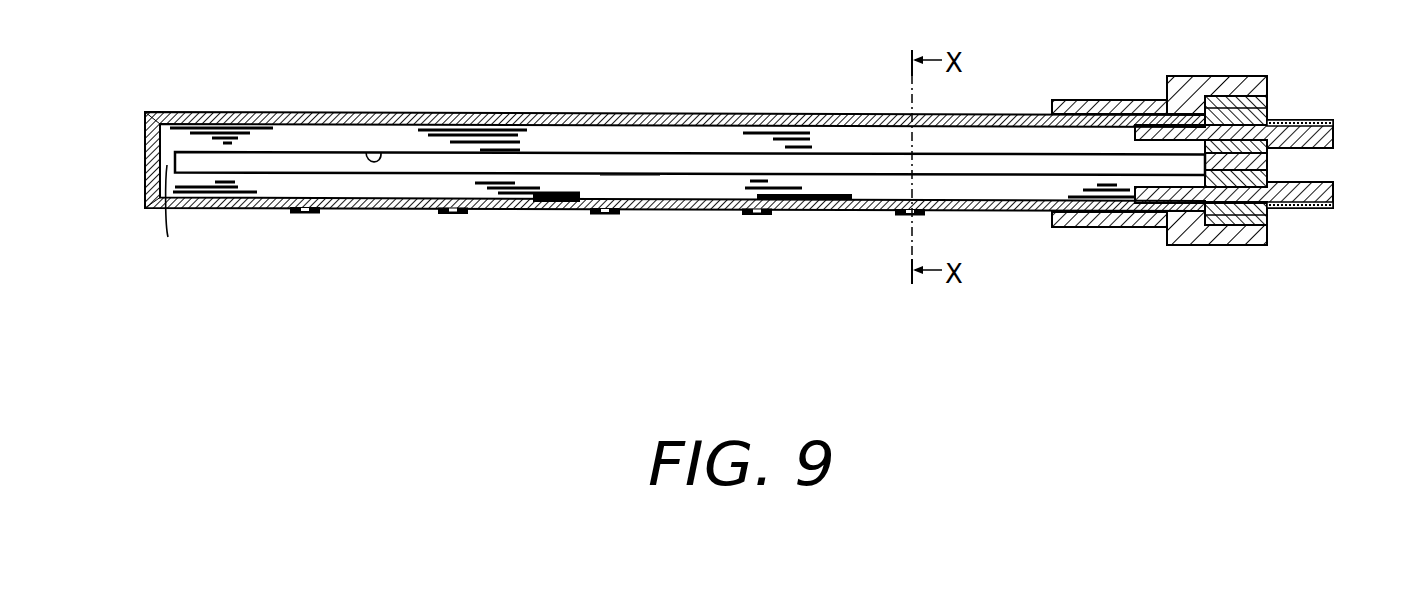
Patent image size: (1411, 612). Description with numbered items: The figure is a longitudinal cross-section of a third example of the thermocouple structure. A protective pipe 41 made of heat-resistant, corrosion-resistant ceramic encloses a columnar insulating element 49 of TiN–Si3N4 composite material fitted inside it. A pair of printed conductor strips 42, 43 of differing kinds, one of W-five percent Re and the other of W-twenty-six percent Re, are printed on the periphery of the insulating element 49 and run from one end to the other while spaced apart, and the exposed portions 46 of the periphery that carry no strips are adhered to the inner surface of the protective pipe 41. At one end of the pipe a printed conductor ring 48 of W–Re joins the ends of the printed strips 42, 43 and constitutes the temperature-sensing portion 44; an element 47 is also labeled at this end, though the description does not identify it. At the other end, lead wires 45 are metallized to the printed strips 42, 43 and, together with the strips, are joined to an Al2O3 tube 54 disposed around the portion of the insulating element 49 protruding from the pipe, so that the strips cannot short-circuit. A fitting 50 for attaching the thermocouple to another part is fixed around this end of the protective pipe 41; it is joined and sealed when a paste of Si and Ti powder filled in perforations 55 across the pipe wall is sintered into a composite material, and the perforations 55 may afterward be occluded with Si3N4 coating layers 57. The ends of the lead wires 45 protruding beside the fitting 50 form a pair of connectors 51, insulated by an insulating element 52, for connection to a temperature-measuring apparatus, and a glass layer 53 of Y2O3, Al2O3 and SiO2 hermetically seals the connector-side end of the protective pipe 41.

The protective pipe 41 is at (690, 113).
The printed conductor strip 42 is at (557, 140).
The printed conductor strip 43 is at (557, 208).
The temperature-sensing portion 44 is at (145, 142).
The lead wires 45 is at (1283, 120).
The exposed portions 46 is at (366, 152).
The seal 47 is at (147, 173).
The printed conductor ring 48 is at (163, 221).
The insulating element 49 is at (630, 165).
The fitting 50 is at (1193, 77).
The connectors 51 is at (1317, 121).
The insulating element 52 is at (1268, 163).
The glass layer 53 is at (1243, 77).
The Al2O3 tube 54 is at (1150, 112).
The perforations 55 is at (303, 212).
The Si3N4 coating layers 57 is at (297, 212).